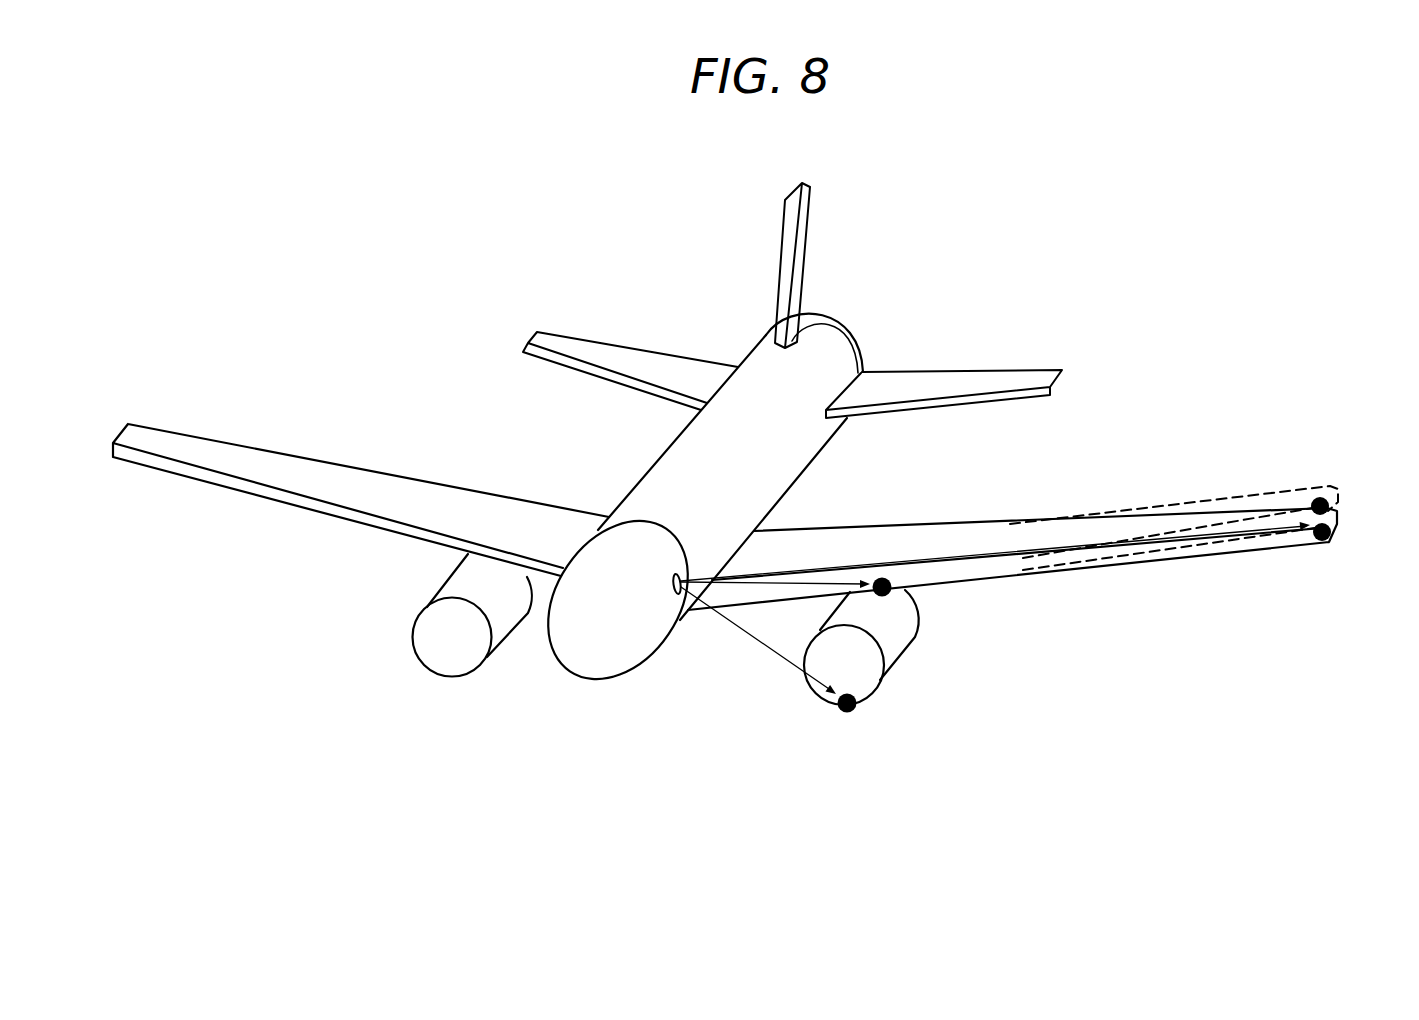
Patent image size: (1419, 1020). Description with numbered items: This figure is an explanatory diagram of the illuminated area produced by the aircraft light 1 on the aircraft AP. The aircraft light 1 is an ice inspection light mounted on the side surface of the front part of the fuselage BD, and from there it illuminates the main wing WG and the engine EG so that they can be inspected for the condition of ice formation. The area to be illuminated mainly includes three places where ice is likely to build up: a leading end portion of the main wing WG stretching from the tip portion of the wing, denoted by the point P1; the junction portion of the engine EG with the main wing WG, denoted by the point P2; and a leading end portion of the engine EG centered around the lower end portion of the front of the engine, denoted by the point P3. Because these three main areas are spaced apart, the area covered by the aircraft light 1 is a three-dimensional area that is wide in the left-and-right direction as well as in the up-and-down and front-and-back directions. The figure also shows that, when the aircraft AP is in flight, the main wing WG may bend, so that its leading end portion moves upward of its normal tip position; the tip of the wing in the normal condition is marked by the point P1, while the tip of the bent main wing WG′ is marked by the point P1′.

The aircraft AP is at (352, 227).
The fuselage BD is at (690, 477).
The main wing WG is at (975, 537).
The bent main wing WG′ is at (1113, 513).
The engine EG is at (902, 633).
The tip portion of the main wing (point) P1 is at (1322, 541).
The tip portion of the bent main wing (point) P1′ is at (1325, 503).
The junction portion of the engine with the main wing (point) P2 is at (886, 577).
The lower end portion of the front of the engine (point) P3 is at (843, 713).
The aircraft light 1 is at (688, 592).